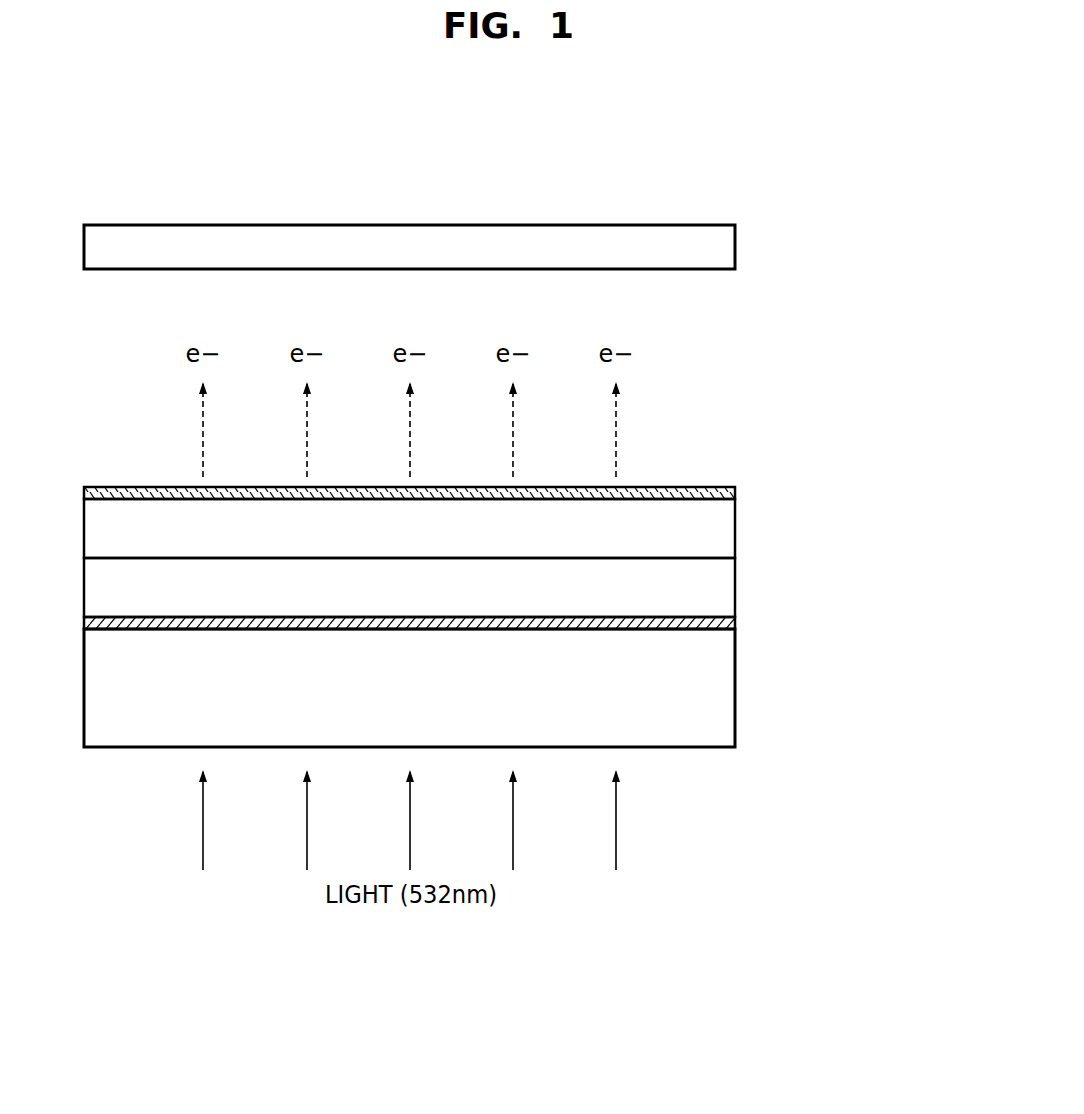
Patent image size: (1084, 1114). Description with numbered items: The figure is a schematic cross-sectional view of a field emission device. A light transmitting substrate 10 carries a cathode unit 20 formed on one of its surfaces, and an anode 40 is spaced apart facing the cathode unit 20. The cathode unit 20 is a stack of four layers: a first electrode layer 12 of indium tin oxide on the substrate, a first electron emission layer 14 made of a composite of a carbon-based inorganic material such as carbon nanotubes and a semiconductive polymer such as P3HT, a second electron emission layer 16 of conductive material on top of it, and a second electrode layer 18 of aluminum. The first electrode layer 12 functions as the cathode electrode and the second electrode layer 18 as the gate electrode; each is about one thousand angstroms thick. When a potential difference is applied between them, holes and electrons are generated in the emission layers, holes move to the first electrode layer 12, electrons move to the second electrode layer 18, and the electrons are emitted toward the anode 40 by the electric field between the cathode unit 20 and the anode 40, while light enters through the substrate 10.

The light transmitting substrate 10 is at (728, 693).
The first electrode layer 12 is at (447, 622).
The first electron emission layer 14 is at (728, 584).
The second electron emission layer 16 is at (728, 522).
The second electrode layer 18 is at (735, 494).
The cathode unit 20 is at (513, 557).
The anode 40 is at (728, 248).